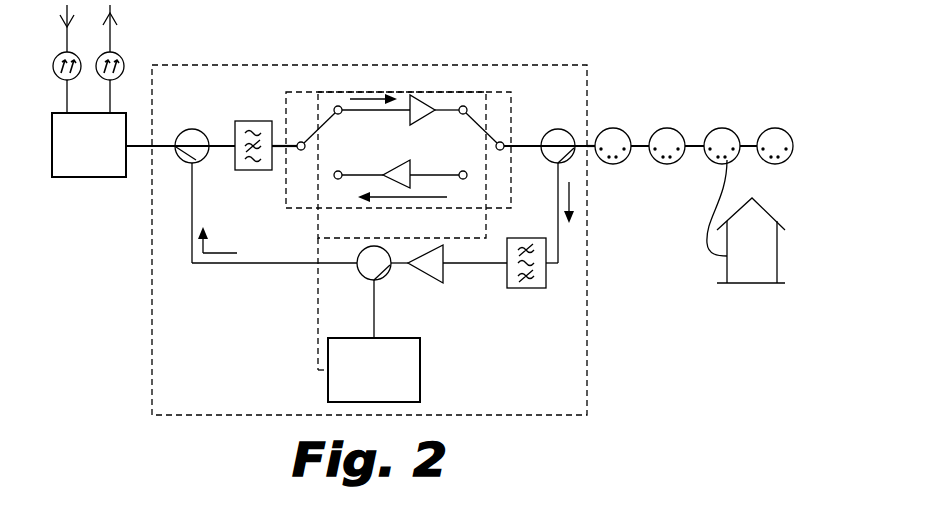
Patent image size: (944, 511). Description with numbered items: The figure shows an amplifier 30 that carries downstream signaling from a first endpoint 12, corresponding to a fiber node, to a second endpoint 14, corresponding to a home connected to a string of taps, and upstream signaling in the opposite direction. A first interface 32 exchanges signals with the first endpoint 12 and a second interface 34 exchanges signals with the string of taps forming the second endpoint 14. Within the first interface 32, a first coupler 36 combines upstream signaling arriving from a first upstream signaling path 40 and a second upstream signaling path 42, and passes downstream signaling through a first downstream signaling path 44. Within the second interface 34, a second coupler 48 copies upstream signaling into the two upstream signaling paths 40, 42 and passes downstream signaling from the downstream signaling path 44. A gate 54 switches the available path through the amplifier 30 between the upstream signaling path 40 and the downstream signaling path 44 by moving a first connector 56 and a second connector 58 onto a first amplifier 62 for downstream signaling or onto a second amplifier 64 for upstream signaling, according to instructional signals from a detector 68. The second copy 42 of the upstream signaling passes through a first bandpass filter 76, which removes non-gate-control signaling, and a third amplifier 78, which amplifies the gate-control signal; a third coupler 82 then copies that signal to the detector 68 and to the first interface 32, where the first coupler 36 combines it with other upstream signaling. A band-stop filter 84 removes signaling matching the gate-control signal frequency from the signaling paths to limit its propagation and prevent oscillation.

The first endpoint 12 is at (140, 37).
The second endpoint 14 is at (747, 93).
The amplifier 30 is at (507, 65).
The first interface 32 is at (150, 147).
The second interface 34 is at (590, 145).
The first coupler 36 is at (184, 163).
The first upstream signaling path 40 is at (407, 198).
The second upstream signaling path 42 is at (220, 253).
The first downstream signaling path 44 is at (371, 97).
The second coupler 48 is at (548, 160).
The gate 54 is at (511, 110).
The first connector 56 is at (305, 140).
The second connector 58 is at (482, 132).
The first amplifier 62 is at (428, 95).
The second amplifier 64 is at (397, 170).
The detector 68 is at (420, 370).
The first bandpass filter 76 is at (546, 273).
The third amplifier 78 is at (445, 273).
The third coupler 82 is at (362, 275).
The band-stop filter 84 is at (245, 121).